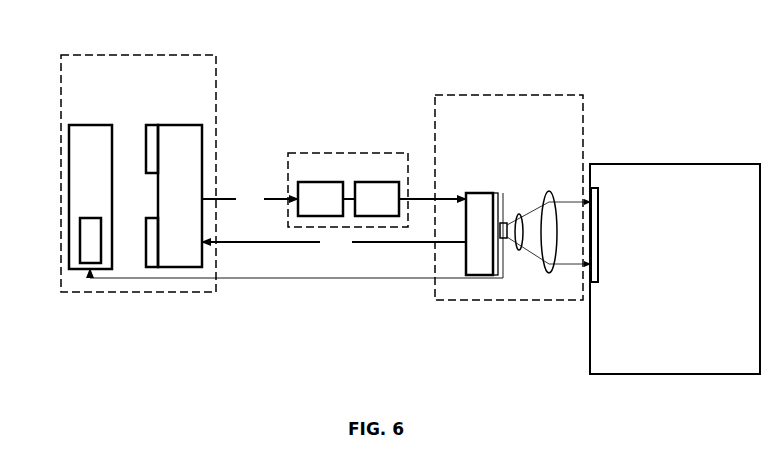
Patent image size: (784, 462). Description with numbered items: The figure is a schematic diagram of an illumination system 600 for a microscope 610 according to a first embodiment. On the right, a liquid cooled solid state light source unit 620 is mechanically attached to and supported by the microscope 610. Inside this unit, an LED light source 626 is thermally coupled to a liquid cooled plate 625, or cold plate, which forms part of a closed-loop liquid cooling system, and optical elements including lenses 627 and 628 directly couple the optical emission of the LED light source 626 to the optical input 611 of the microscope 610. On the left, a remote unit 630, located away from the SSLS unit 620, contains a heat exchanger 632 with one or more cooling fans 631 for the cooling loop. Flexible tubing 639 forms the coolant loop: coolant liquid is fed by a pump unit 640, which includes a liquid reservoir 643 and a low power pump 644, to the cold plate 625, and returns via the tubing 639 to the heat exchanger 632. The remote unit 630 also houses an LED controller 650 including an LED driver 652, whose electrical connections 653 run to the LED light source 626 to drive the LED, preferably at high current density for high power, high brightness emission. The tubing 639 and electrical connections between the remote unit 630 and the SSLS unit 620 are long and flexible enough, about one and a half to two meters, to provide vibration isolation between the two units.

The illumination system 600 is at (684, 70).
The microscope 610 is at (675, 269).
The optical input 611 is at (597, 279).
The liquid cooled solid state light source unit 620 is at (509, 197).
The liquid cooled plate 625 is at (496, 193).
The LED light source 626 is at (505, 222).
The lens 627 is at (521, 215).
The lens 628 is at (552, 194).
The remote unit 630 is at (138, 173).
The cooling fan 631 is at (144, 166).
The heat exchanger 632 is at (180, 196).
The flexible tubing 639 is at (334, 220).
The pump unit 640 is at (348, 190).
The liquid reservoir 643 is at (320, 199).
The low power pump 644 is at (377, 199).
The LED controller 650 is at (90, 197).
The LED driver 652 is at (85, 242).
The electrical connections 653 is at (296, 240).